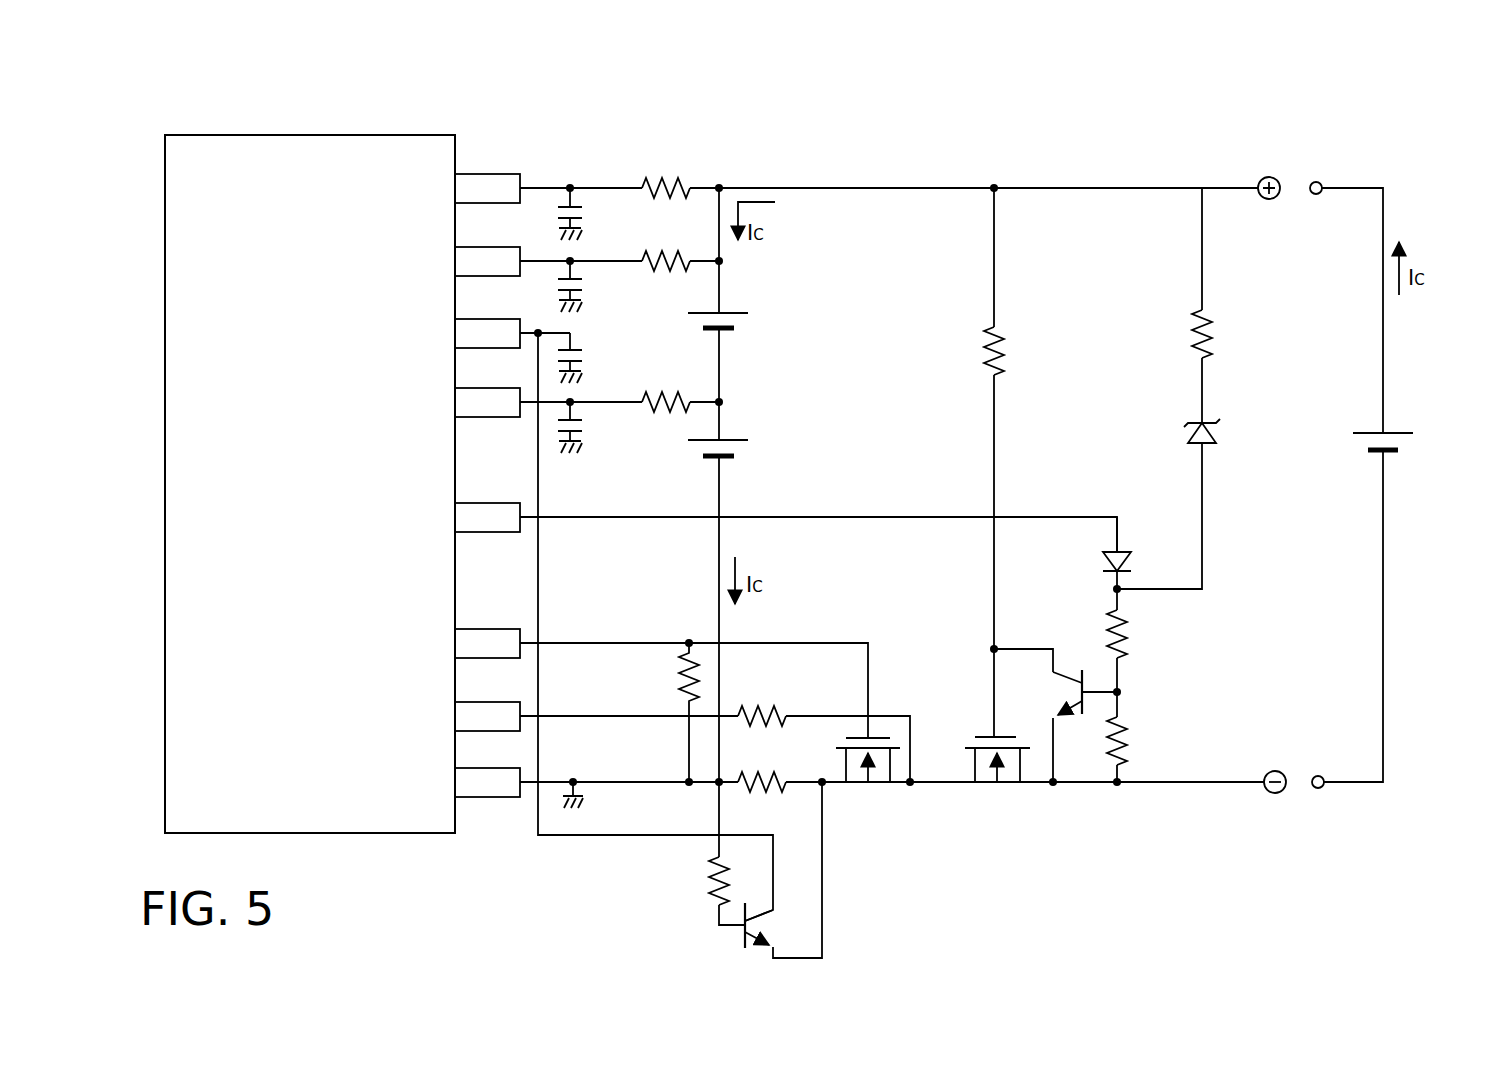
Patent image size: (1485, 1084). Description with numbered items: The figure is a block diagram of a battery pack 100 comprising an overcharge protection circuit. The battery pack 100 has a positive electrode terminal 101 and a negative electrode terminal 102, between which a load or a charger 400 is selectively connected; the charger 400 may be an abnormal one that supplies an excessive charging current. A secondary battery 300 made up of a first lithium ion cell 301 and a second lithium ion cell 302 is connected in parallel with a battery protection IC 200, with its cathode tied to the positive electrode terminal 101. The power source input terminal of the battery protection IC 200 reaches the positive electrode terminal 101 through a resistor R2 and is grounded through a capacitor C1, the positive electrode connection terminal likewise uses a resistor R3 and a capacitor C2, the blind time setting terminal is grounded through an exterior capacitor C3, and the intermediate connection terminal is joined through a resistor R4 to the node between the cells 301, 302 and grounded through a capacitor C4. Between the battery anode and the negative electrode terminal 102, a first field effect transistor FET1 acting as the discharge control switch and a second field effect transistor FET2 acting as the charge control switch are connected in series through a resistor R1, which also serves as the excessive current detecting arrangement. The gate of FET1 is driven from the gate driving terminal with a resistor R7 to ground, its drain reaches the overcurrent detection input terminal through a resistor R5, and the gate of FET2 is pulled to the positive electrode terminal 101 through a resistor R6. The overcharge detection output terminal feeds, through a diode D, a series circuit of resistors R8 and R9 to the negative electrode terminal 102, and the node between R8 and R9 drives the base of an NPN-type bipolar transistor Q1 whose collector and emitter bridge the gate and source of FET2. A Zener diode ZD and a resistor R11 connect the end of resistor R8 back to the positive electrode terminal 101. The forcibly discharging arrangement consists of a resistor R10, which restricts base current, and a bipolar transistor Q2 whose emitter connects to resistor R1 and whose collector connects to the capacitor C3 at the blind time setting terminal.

The battery pack 100 is at (403, 856).
The battery protection IC 200 is at (335, 135).
The secondary battery 300 is at (765, 388).
The first lithium ion cell 301 is at (748, 319).
The second lithium ion cell 302 is at (746, 470).
The charger 400 is at (1408, 441).
The positive electrode terminal 101 is at (1269, 177).
The negative electrode terminal 102 is at (1275, 793).
The resistor R1 is at (783, 757).
The resistor R2 is at (672, 178).
The resistor R3 is at (672, 251).
The resistor R4 is at (672, 392).
The resistor R5 is at (768, 698).
The resistor R6 is at (1006, 351).
The resistor R7 is at (677, 670).
The resistor R8 is at (1130, 636).
The resistor R9 is at (1130, 743).
The resistor R10 is at (708, 890).
The resistor R11 is at (1214, 334).
The capacitor C1 is at (587, 211).
The capacitor C2 is at (587, 283).
The capacitor C3 is at (587, 354).
The capacitor C4 is at (587, 424).
The diode D is at (1131, 560).
The Zener diode ZD is at (1222, 432).
The NPN-type bipolar transistor Q1 is at (1076, 690).
The bipolar transistor Q2 is at (752, 954).
The first field effect transistor FET1 is at (876, 795).
The second field effect transistor FET2 is at (988, 795).